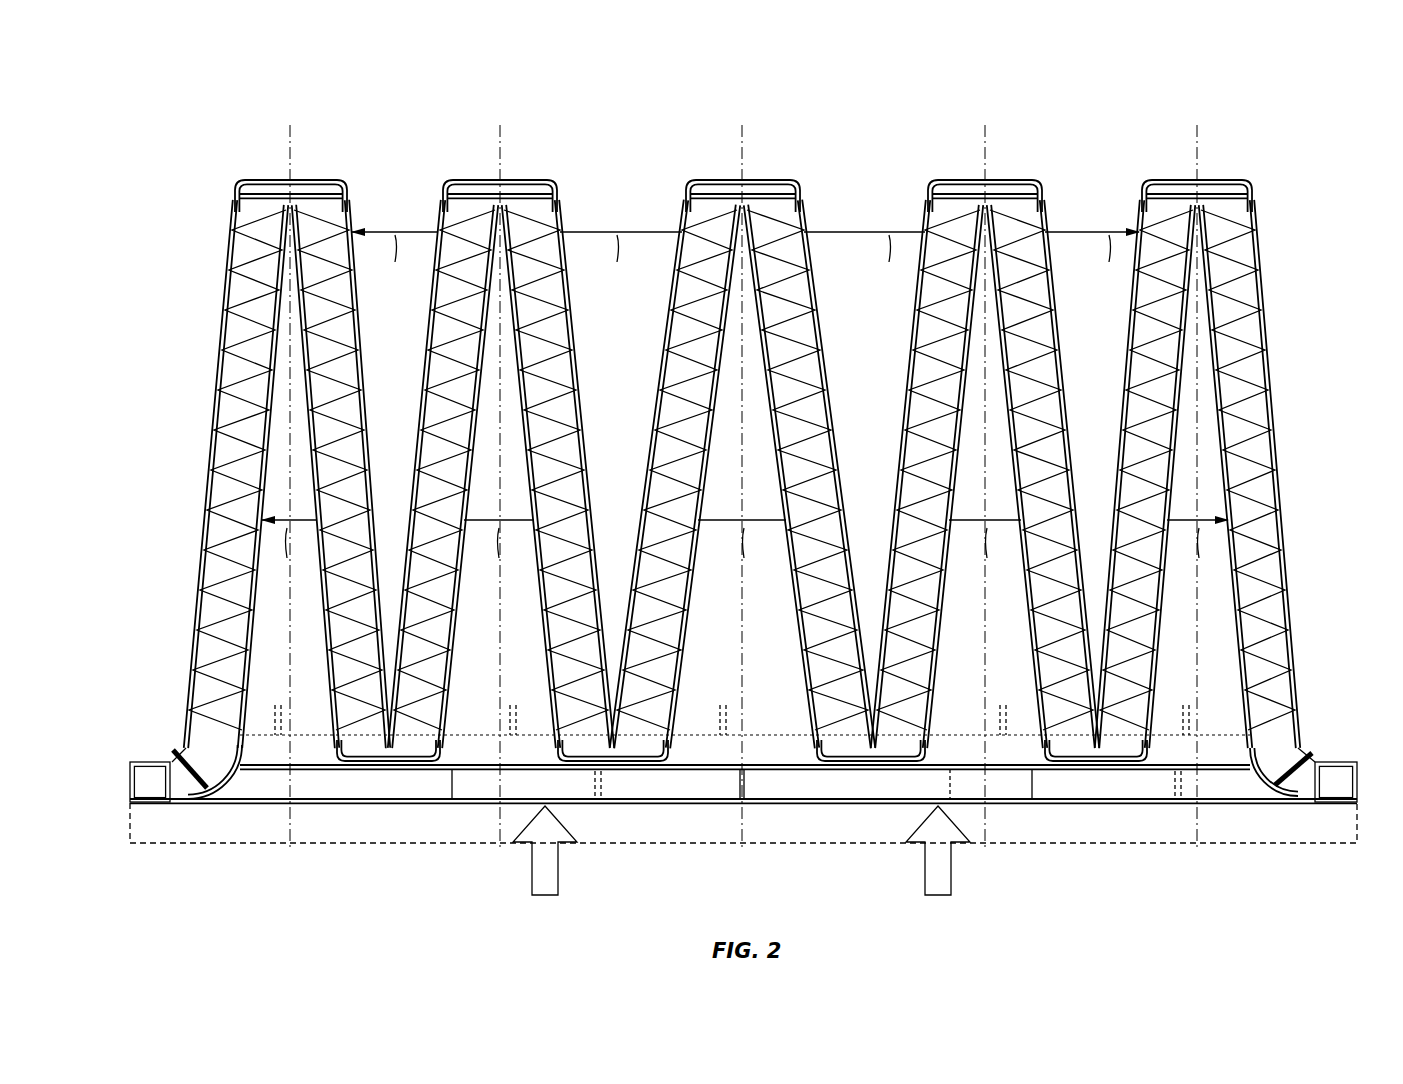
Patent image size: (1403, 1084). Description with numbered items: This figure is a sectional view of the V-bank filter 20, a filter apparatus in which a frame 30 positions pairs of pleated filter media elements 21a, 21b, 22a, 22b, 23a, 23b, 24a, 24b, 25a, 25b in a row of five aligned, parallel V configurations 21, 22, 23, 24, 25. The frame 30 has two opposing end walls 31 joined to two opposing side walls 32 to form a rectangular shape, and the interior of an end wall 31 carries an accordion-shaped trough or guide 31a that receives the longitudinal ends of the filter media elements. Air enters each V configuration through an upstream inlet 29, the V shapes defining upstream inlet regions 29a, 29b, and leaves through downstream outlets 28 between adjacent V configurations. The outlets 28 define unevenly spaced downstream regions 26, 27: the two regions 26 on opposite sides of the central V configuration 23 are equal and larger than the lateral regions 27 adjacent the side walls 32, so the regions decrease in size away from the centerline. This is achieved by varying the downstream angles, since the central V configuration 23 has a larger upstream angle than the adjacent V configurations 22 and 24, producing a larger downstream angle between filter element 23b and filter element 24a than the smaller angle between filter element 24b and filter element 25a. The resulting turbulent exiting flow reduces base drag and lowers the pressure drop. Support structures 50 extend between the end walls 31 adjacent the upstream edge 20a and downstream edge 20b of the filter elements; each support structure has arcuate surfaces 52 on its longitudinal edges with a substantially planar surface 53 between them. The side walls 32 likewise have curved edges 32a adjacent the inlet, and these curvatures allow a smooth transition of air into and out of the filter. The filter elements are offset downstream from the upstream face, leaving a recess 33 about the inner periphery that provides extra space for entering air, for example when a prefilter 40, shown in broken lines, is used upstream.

The V-bank filter 20 is at (1340, 455).
The upstream edge 20a is at (598, 760).
The downstream edge 20b is at (745, 190).
The V configuration 21 is at (287, 514).
The filter media element 21a is at (243, 185).
The filter media element 21b is at (303, 195).
The V configuration 22 is at (501, 505).
The filter media element 22a is at (455, 186).
The filter media element 22b is at (522, 195).
The V configuration 23 is at (742, 471).
The filter media element 23a is at (703, 185).
The filter media element 23b is at (770, 195).
The V configuration 24 is at (990, 491).
The filter media element 24a is at (935, 186).
The filter media element 24b is at (1010, 196).
The V configuration 25 is at (1217, 504).
The filter media element 25a is at (1150, 186).
The filter media element 25b is at (1269, 447).
The downstream outlet region 26 is at (612, 168).
The downstream outlet region 27 is at (393, 168).
The downstream outlet 28 is at (393, 420).
The upstream inlet 29 is at (300, 668).
The upstream inlet region 29a is at (770, 735).
The upstream inlet region 29b is at (300, 722).
The frame 30 is at (702, 805).
The end wall 31 is at (1222, 642).
The trough or guide 31a is at (1285, 540).
The side wall 32 is at (168, 745).
The curved surface or edge 32a is at (205, 800).
The recess 33 is at (950, 785).
The prefilter 40 is at (1333, 835).
The support structure 50 is at (998, 168).
The curved surface 52 is at (935, 205).
The planar surface 53 is at (968, 188).